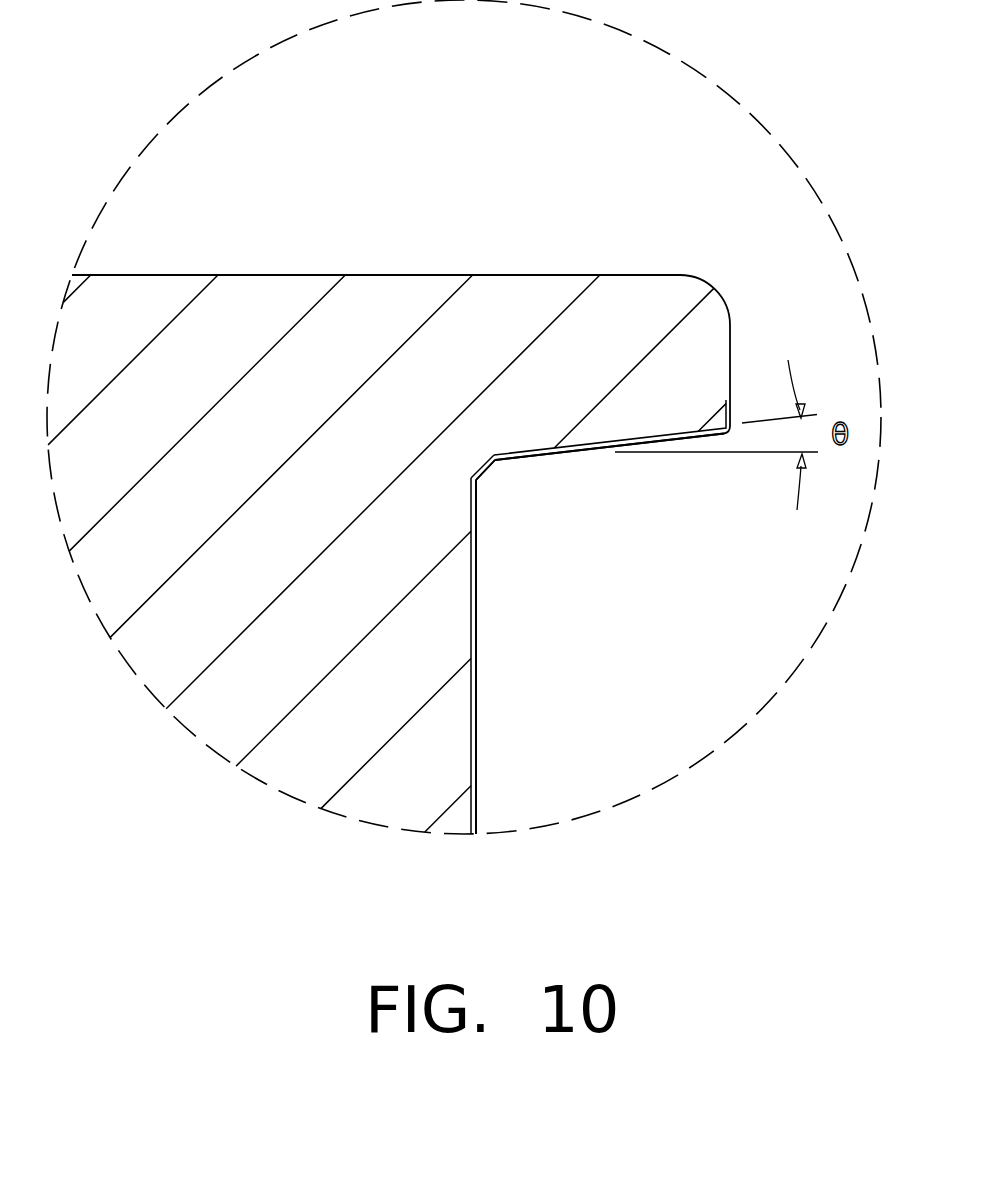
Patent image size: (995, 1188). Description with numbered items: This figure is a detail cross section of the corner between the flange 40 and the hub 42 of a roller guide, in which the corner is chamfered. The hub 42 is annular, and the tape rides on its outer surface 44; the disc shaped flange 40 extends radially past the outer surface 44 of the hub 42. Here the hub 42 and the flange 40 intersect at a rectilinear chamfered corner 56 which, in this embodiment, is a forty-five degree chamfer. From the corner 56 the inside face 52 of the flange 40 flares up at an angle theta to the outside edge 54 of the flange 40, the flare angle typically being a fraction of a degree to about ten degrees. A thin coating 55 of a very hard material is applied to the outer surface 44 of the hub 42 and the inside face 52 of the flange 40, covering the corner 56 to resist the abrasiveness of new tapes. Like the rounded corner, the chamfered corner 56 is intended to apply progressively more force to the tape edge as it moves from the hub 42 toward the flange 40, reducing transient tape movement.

The flange 40 is at (661, 291).
The hub 42 is at (457, 744).
The outer surface 44 is at (469, 620).
The inside face 52 is at (651, 433).
The outside edge 54 is at (732, 340).
The coating 55 is at (492, 454).
The chamfered corner 56 is at (490, 466).